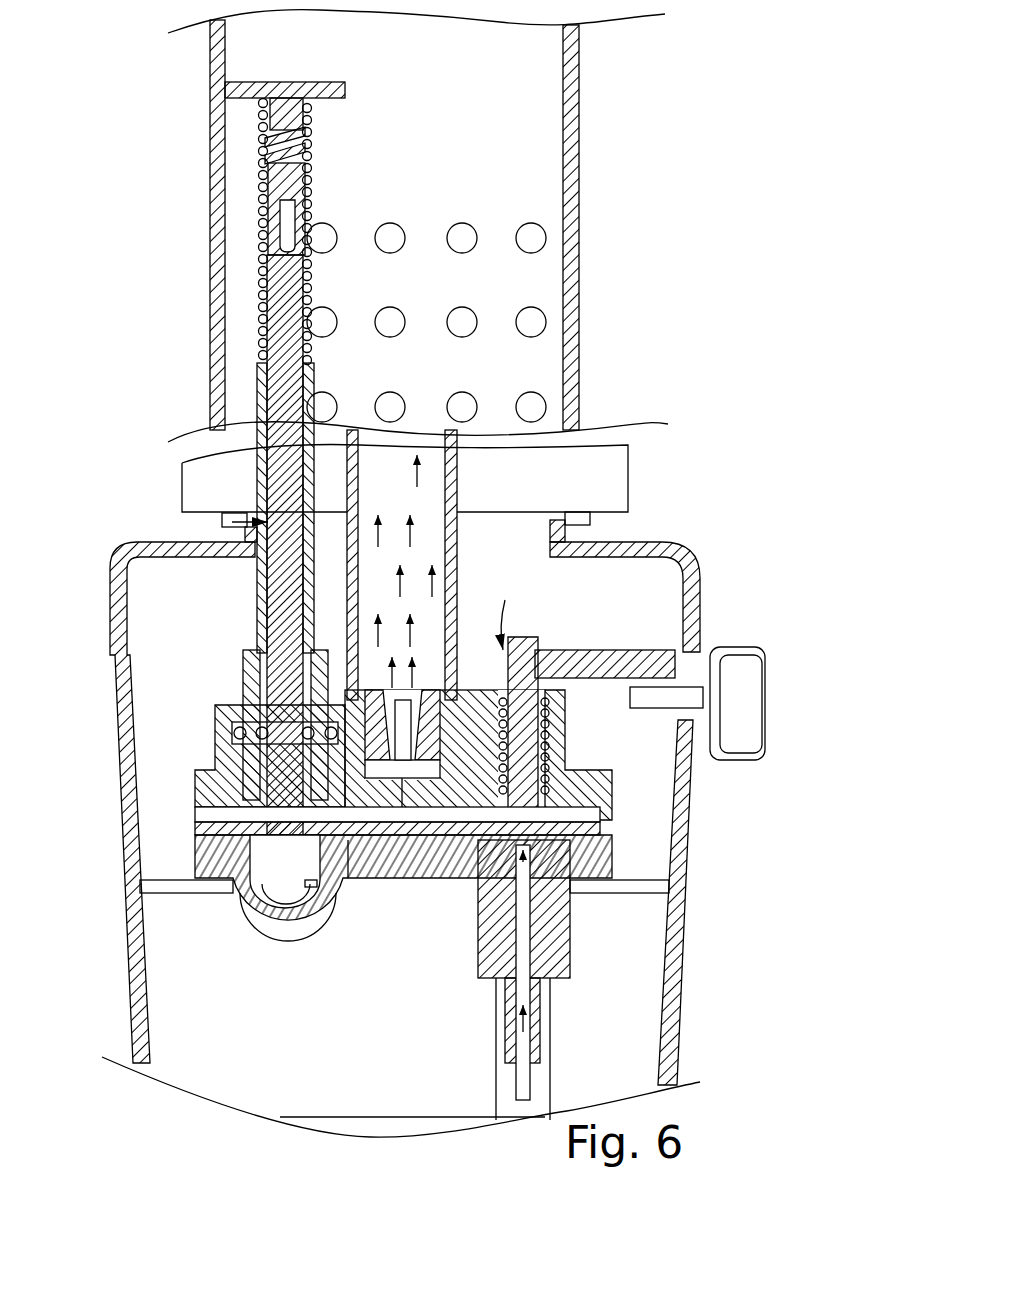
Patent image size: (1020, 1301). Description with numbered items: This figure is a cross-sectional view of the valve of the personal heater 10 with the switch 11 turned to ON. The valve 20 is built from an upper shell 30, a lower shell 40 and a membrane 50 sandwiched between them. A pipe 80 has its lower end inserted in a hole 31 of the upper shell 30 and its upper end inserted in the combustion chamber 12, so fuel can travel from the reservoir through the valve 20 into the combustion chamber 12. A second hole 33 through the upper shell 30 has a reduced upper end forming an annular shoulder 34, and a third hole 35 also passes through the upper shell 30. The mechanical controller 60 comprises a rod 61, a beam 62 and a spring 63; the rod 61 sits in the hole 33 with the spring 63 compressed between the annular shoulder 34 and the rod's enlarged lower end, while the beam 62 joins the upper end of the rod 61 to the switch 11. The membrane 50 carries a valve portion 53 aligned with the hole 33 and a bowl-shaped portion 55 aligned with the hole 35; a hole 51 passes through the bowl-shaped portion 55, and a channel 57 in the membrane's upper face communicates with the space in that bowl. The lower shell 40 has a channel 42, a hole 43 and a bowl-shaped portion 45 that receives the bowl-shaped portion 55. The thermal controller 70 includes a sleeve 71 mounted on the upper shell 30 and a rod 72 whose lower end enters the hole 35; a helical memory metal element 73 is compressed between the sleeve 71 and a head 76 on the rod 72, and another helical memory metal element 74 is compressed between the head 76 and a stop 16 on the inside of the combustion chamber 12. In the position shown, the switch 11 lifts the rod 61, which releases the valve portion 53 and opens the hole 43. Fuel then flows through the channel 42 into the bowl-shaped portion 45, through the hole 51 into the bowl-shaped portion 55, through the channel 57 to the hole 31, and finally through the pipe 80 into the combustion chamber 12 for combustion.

The personal heater 10 is at (700, 966).
The switch 11 is at (742, 706).
The combustion chamber 12 is at (533, 117).
The stop 16 is at (262, 103).
The valve 20 is at (190, 745).
The upper shell 30 is at (215, 780).
The hole 31 is at (378, 883).
The hole 33 is at (550, 823).
The annular shoulder 34 is at (540, 665).
The hole 35 is at (215, 815).
The lower shell 40 is at (205, 850).
The channel 42 is at (407, 882).
The hole 43 is at (535, 850).
The bowl-shaped portion 45 is at (235, 900).
The membrane 50 is at (200, 829).
The hole 51 is at (286, 902).
The valve portion 53 is at (478, 895).
The bowl-shaped portion 55 is at (313, 890).
The channel 57 is at (348, 878).
The mechanical controller 60 is at (508, 611).
The rod 61 is at (533, 803).
The beam 62 is at (607, 650).
The spring 63 is at (550, 768).
The thermal controller 70 is at (232, 522).
The sleeve 71 is at (258, 637).
The rod 72 is at (265, 600).
The helical memory metal element 73 is at (263, 318).
The helical memory metal element 74 is at (268, 143).
The head 76 is at (265, 190).
The pipe 80 is at (350, 468).